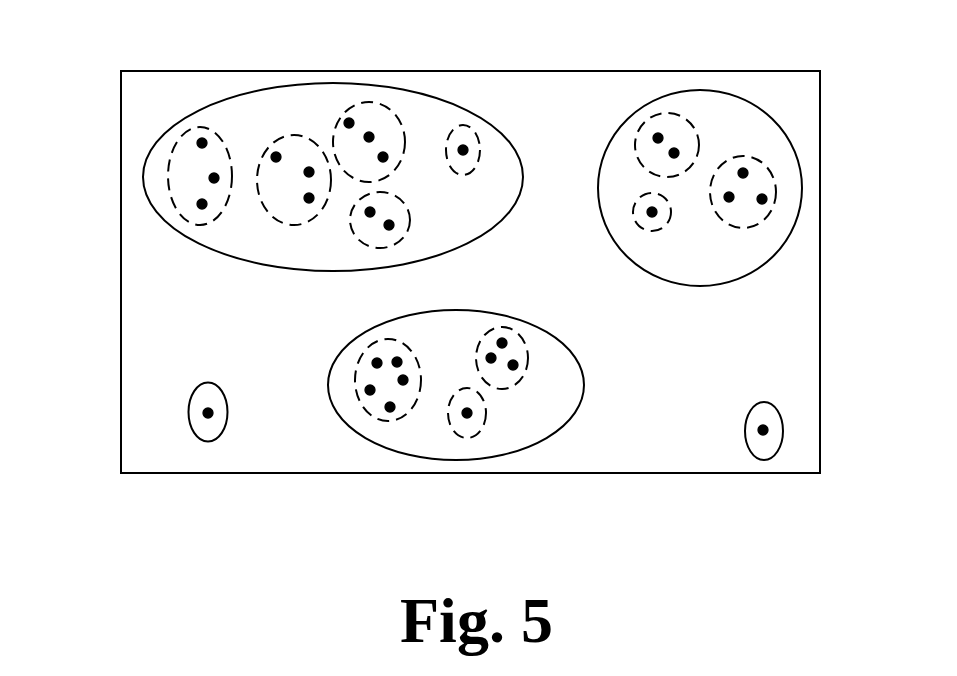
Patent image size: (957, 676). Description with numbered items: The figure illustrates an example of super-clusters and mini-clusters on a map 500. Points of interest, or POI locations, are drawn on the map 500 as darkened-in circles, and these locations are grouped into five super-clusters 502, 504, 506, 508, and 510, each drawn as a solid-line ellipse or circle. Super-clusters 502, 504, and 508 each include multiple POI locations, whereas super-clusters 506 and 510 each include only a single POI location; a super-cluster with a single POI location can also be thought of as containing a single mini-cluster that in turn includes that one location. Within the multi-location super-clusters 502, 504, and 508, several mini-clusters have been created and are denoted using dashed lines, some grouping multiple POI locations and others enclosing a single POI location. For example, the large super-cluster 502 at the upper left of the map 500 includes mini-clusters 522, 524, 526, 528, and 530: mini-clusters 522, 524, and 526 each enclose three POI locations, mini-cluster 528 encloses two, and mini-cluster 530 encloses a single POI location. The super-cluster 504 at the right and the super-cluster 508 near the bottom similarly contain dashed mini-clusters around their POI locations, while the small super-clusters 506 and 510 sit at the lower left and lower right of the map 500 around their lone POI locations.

The map 500 is at (143, 71).
The super-cluster 502 is at (200, 110).
The super-cluster 504 is at (770, 117).
The super-cluster 506 is at (193, 393).
The super-cluster 508 is at (418, 458).
The super-cluster 510 is at (780, 412).
The mini-cluster 522 is at (173, 148).
The mini-cluster 524 is at (270, 137).
The mini-cluster 526 is at (348, 103).
The mini-cluster 528 is at (362, 240).
The mini-cluster 530 is at (460, 128).